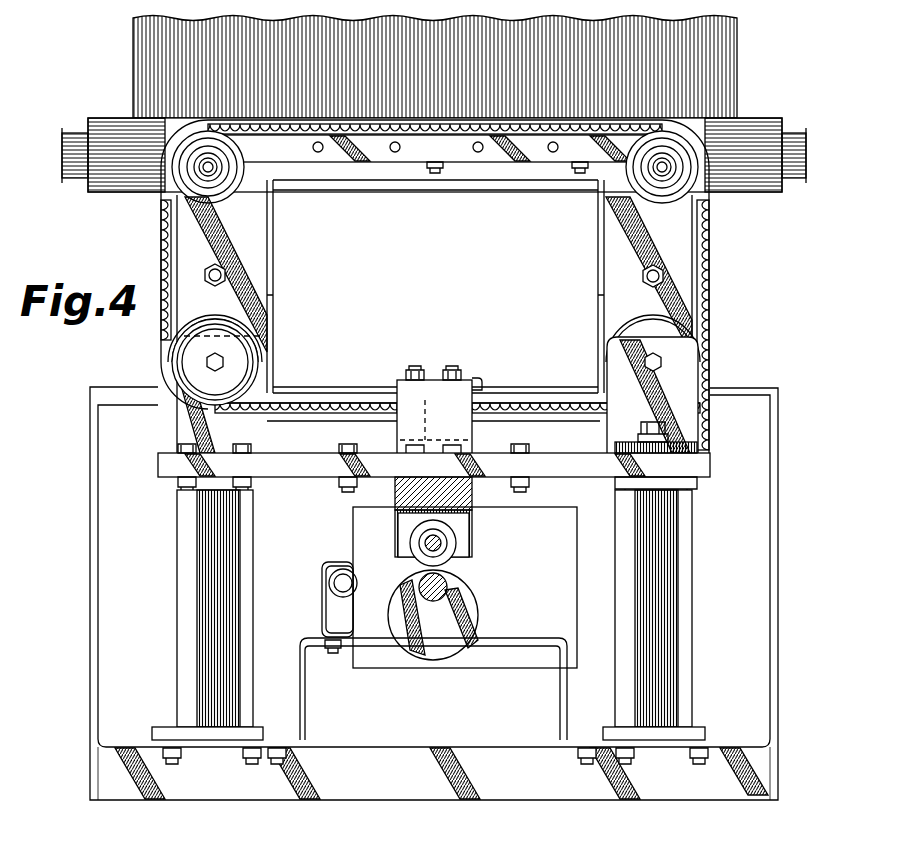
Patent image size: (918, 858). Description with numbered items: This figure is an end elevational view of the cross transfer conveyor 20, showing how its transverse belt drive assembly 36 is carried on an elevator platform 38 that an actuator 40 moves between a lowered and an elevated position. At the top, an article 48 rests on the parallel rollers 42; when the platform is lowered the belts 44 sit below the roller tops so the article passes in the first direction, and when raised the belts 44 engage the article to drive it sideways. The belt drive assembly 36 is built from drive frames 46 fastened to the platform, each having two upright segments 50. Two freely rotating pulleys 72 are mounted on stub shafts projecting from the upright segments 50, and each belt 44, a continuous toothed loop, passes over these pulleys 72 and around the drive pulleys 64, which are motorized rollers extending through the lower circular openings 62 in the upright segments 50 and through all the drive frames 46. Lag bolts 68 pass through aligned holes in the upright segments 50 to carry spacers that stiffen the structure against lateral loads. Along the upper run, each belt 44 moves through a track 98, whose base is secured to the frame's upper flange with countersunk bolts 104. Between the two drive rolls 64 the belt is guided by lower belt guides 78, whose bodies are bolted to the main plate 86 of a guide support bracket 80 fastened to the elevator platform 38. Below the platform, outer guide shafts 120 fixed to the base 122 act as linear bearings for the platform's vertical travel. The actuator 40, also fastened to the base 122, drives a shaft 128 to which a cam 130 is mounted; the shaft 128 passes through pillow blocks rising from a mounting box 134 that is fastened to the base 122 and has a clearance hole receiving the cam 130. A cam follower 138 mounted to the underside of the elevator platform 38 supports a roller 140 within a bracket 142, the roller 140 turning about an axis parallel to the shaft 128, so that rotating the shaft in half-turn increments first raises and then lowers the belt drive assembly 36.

The cross transfer conveyor 20 is at (138, 254).
The transverse belt drive assembly 36 is at (160, 345).
The elevator platform 38 is at (160, 462).
The actuator 40 is at (308, 565).
The parallel rollers 42 is at (108, 122).
The parallel belts 44 is at (161, 208).
The drive frames 46 is at (273, 248).
The article 48 is at (446, 83).
The upright segments 50 is at (273, 299).
The lower circular opening 62 is at (178, 324).
The drive pulleys 64 is at (250, 330).
The lag bolts 68 is at (226, 276).
The freely rotating pulleys 72 is at (222, 200).
The lower belt guides 78 is at (434, 417).
The guide support bracket 80 is at (418, 368).
The main plate 86 is at (472, 372).
The track 98 is at (518, 152).
The countersunk bolts 104 is at (436, 174).
The outer guide shafts 120 is at (177, 634).
The base 122 is at (778, 776).
The shaft 128 is at (448, 585).
The cam 130 is at (480, 612).
The mounting box 134 is at (302, 698).
The cam follower 138 is at (485, 527).
The roller 140 is at (458, 543).
The bracket 142 is at (396, 532).